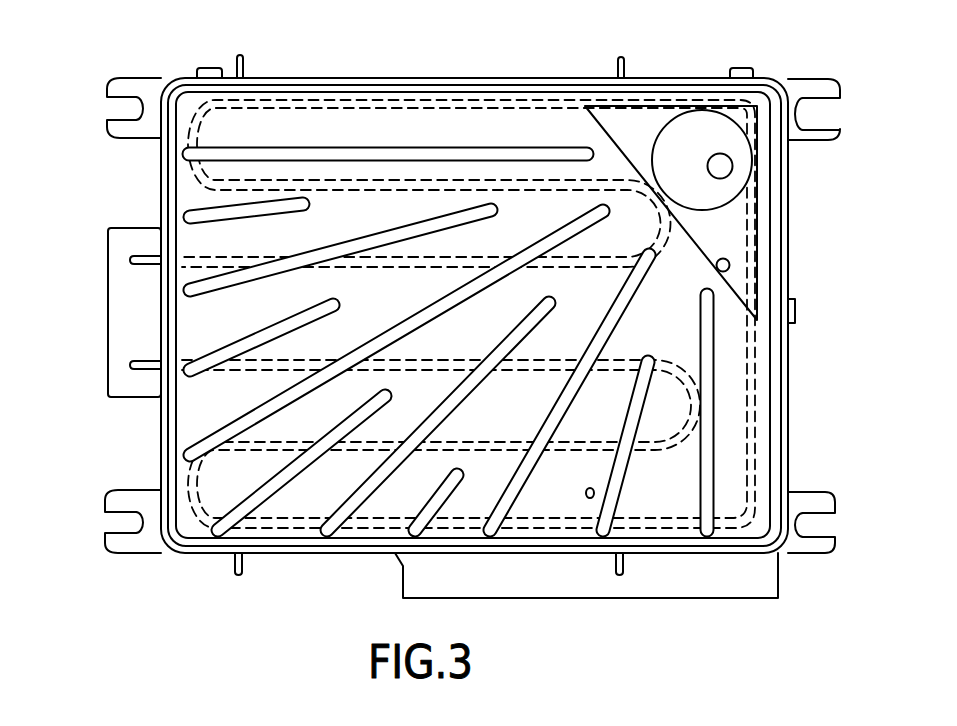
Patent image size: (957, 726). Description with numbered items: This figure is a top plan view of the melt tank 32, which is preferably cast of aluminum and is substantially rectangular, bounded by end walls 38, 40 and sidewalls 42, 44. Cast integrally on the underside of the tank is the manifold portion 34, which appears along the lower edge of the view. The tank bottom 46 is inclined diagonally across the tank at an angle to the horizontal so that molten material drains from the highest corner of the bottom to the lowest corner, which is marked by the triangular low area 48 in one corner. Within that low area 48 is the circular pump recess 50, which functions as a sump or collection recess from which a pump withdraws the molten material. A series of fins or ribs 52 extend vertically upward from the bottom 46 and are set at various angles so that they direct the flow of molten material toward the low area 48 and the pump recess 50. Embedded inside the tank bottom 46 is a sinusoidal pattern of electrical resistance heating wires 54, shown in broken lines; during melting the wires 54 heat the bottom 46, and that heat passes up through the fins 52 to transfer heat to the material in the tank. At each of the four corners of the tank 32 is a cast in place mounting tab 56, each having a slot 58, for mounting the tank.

The melt tank 32 is at (380, 54).
The integral manifold portion 34 is at (738, 592).
The end wall 38 is at (164, 188).
The end wall 40 is at (777, 222).
The sidewall 42 is at (285, 557).
The sidewall 44 is at (298, 84).
The bottom 46 is at (677, 338).
The triangular low area 48 is at (737, 253).
The circular pump recess 50 is at (741, 185).
The fins or ribs 52 is at (327, 313).
The electrical resistance heating wires 54 is at (493, 100).
The cast in place mounting tab 56 is at (133, 78).
The slot 58 is at (126, 100).